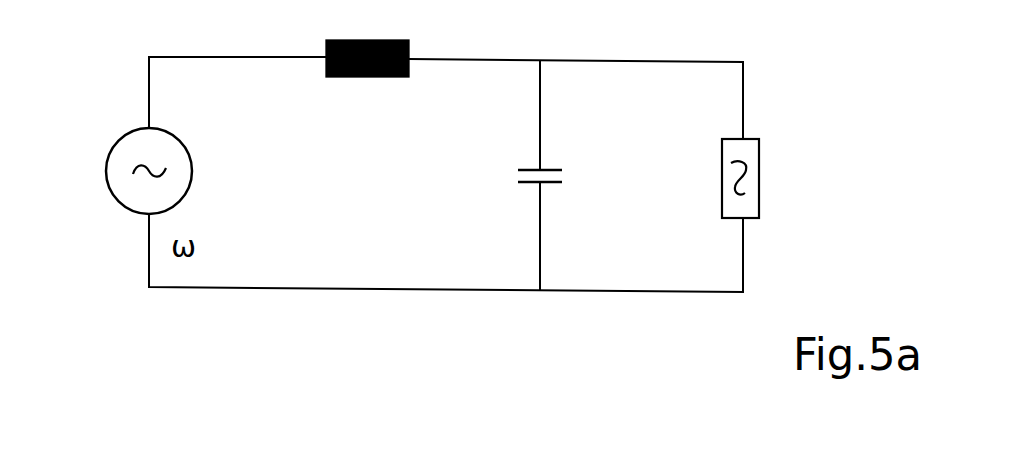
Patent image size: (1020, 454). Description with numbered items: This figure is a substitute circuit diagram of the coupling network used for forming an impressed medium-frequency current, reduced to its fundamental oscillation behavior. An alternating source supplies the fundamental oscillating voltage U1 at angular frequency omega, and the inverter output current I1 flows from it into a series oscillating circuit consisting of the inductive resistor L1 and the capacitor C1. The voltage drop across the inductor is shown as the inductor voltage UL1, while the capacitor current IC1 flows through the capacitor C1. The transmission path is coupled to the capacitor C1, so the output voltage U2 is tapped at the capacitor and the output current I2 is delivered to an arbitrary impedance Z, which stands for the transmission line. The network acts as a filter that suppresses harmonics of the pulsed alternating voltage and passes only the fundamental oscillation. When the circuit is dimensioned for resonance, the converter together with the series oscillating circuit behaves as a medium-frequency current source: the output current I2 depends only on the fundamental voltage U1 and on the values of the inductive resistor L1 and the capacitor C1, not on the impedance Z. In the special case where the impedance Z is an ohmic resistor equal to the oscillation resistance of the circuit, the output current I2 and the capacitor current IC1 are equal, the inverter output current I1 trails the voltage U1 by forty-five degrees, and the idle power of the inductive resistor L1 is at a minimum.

The fundamental oscillating voltage U1 is at (91, 123).
The inductive resistor L1 is at (367, 38).
The voltage across inductive resistor UL1 is at (400, 93).
The inverter output current I1 is at (255, 44).
The output current I2 is at (662, 52).
The capacitor C1 is at (526, 158).
The capacitor current IC1 is at (526, 200).
The output voltage U2 is at (571, 127).
The impedance Z is at (759, 178).